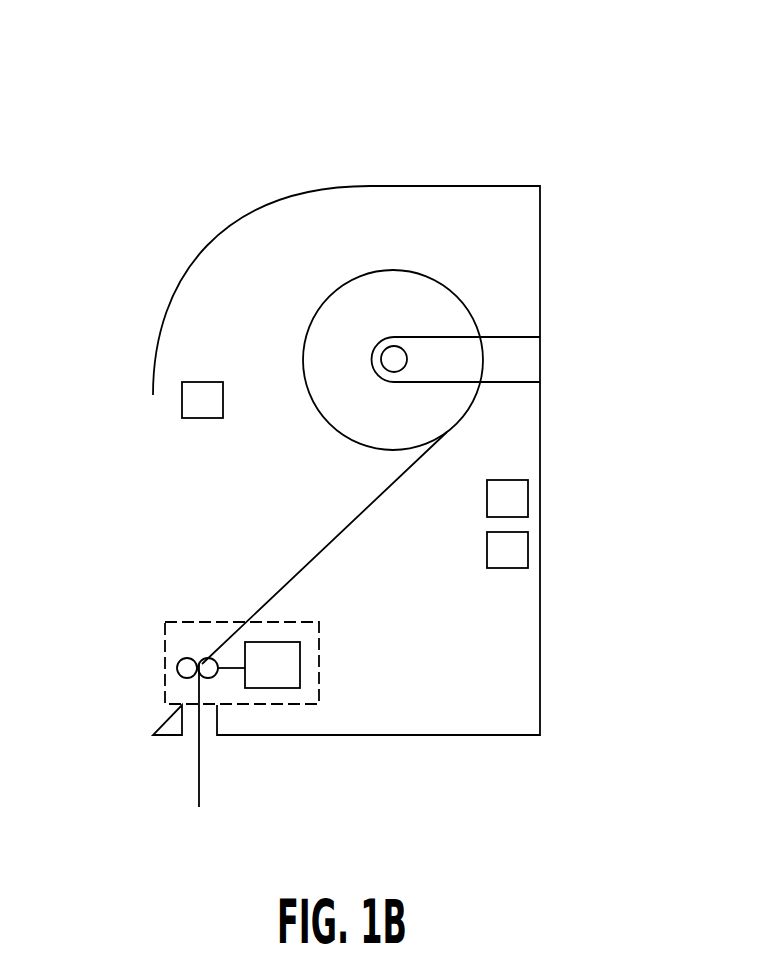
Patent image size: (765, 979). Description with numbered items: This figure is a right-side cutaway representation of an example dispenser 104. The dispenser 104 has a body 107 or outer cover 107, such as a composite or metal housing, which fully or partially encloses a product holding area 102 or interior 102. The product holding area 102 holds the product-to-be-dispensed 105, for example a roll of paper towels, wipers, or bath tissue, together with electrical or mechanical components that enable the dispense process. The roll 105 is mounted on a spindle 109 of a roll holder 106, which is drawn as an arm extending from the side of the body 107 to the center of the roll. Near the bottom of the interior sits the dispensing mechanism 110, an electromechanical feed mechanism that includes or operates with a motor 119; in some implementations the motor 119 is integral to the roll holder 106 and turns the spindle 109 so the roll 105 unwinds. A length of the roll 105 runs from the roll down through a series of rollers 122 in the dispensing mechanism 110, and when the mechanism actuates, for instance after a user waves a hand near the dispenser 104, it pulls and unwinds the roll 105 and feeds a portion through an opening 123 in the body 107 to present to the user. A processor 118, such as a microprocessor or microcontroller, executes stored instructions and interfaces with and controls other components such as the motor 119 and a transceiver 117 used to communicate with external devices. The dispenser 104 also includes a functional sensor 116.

The product holding area 102 is at (339, 245).
The dispenser 104 is at (106, 142).
The product-to-be-dispensed 105 is at (352, 412).
The roll holder 106 is at (534, 358).
The body 107 is at (235, 203).
The spindle 109 is at (395, 352).
The dispensing mechanism 110 is at (320, 657).
The functional sensor 116 is at (512, 498).
The transceiver 117 is at (513, 548).
The processor 118 is at (195, 402).
The motor 119 is at (272, 672).
The rollers 122 is at (185, 668).
The opening 123 is at (186, 746).